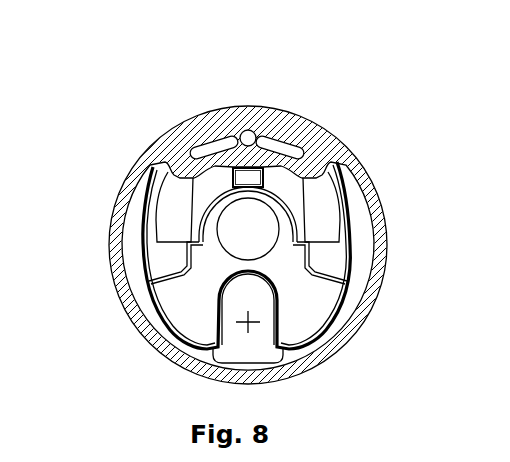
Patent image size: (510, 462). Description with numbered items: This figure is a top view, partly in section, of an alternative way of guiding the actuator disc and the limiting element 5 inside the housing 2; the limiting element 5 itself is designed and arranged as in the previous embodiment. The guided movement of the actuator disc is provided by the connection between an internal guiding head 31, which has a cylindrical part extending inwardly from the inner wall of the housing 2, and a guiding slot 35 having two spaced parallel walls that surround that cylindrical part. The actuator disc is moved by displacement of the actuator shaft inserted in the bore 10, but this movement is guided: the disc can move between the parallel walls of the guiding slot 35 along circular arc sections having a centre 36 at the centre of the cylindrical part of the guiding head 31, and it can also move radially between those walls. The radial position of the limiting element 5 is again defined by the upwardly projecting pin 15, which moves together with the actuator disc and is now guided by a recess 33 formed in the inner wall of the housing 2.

The housing 2 is at (163, 148).
The limiting element 5 is at (322, 203).
The bore 10 is at (236, 229).
The upwardly projecting pin 15 is at (253, 133).
The internal guiding head 31 is at (225, 350).
The recess 33 is at (213, 150).
The guiding slot 35 is at (230, 303).
The centre 36 is at (255, 322).